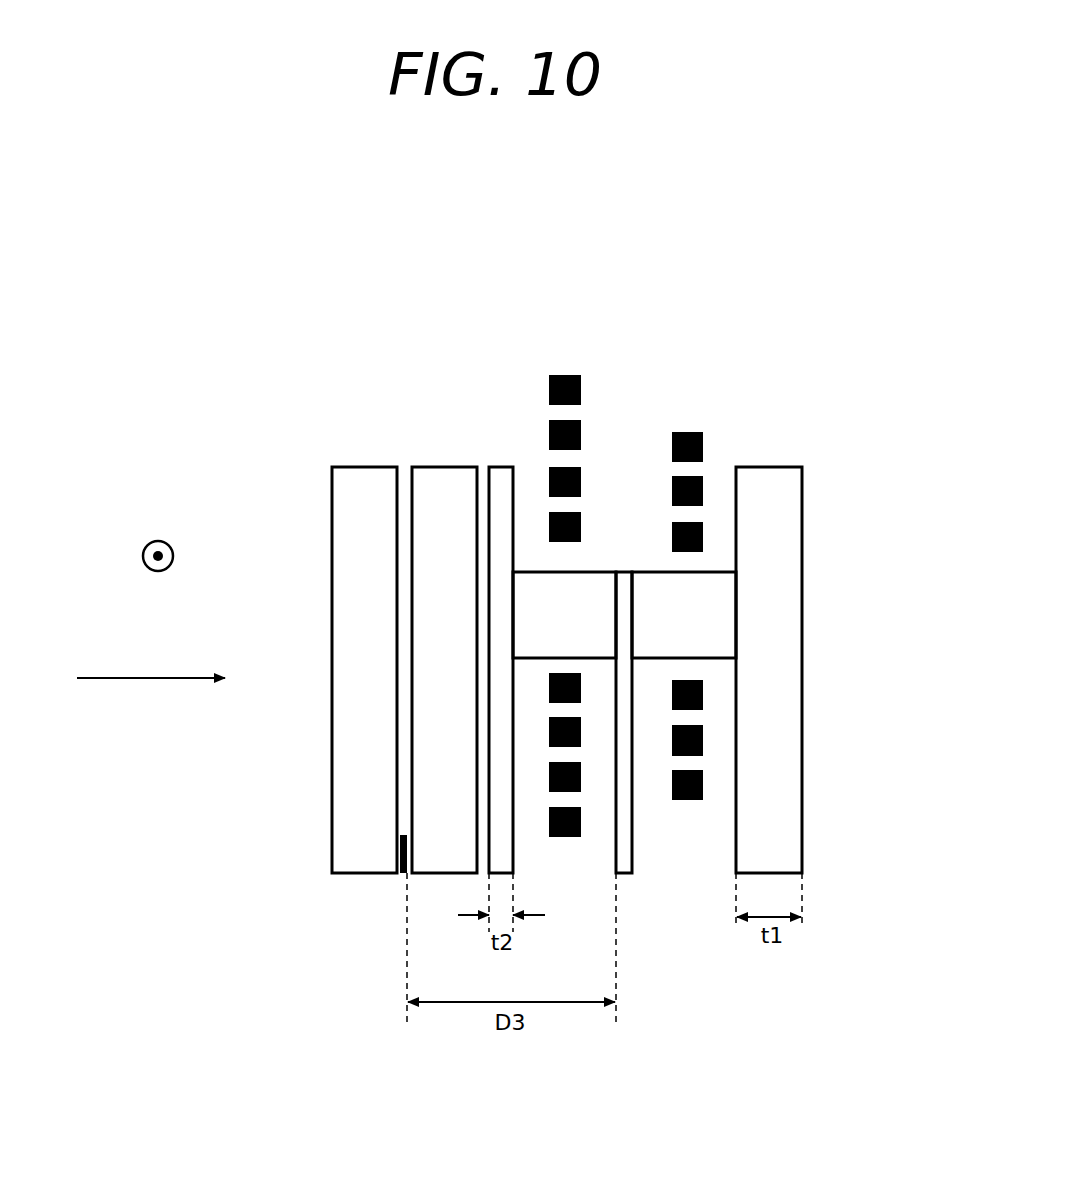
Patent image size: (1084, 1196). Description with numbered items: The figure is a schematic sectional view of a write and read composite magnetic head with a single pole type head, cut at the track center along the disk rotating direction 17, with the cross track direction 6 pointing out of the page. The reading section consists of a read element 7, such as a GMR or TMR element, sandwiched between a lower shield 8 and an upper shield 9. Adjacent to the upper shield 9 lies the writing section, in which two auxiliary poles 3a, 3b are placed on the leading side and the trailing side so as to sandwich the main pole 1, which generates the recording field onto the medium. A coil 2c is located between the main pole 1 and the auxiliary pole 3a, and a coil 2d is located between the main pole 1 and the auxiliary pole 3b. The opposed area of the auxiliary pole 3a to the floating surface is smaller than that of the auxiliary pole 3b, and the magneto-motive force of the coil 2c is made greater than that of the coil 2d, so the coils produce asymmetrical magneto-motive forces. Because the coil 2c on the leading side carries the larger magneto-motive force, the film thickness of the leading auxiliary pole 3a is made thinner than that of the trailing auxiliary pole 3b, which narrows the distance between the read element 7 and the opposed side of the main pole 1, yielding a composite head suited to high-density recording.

The main pole 1 is at (629, 880).
The coil 2c is at (567, 366).
The coil 2d is at (695, 421).
The auxiliary pole 3a is at (502, 456).
The auxiliary pole 3b is at (792, 458).
The cross track direction 6 is at (164, 589).
The read element 7 is at (396, 880).
The lower shield 8 is at (361, 456).
The upper shield 9 is at (446, 456).
The disk rotating direction 17 is at (158, 714).